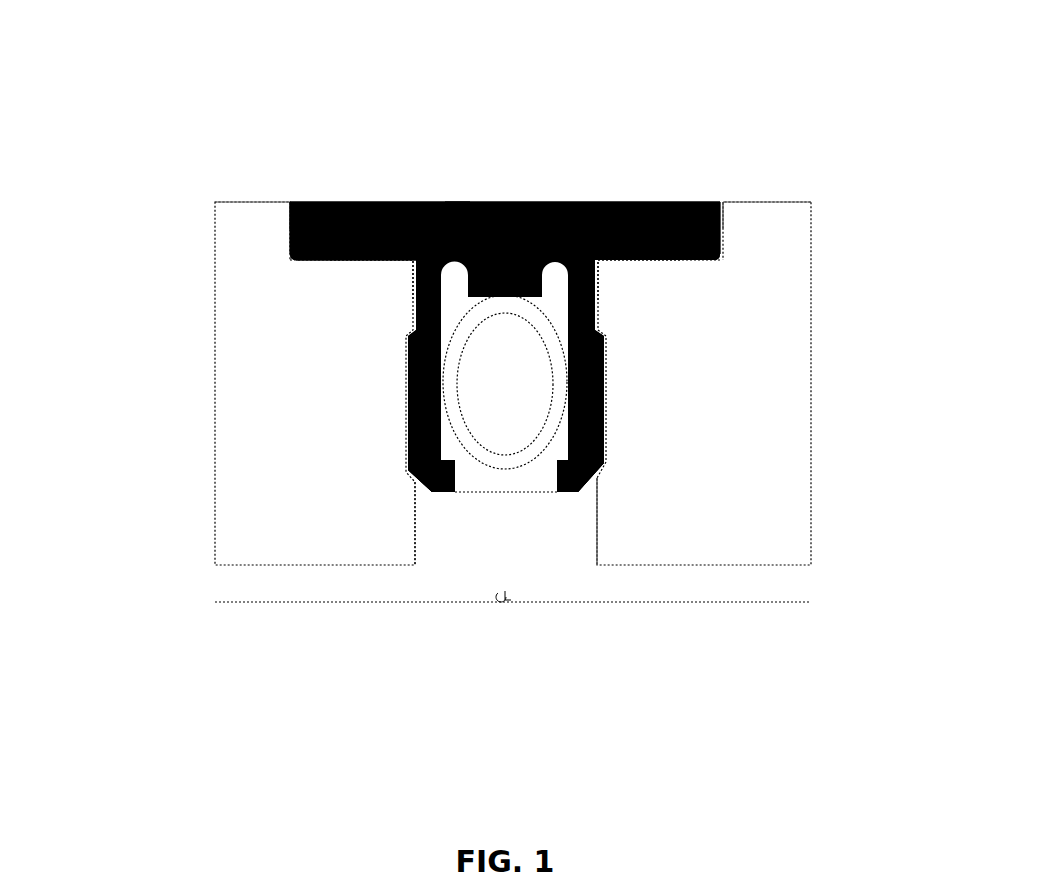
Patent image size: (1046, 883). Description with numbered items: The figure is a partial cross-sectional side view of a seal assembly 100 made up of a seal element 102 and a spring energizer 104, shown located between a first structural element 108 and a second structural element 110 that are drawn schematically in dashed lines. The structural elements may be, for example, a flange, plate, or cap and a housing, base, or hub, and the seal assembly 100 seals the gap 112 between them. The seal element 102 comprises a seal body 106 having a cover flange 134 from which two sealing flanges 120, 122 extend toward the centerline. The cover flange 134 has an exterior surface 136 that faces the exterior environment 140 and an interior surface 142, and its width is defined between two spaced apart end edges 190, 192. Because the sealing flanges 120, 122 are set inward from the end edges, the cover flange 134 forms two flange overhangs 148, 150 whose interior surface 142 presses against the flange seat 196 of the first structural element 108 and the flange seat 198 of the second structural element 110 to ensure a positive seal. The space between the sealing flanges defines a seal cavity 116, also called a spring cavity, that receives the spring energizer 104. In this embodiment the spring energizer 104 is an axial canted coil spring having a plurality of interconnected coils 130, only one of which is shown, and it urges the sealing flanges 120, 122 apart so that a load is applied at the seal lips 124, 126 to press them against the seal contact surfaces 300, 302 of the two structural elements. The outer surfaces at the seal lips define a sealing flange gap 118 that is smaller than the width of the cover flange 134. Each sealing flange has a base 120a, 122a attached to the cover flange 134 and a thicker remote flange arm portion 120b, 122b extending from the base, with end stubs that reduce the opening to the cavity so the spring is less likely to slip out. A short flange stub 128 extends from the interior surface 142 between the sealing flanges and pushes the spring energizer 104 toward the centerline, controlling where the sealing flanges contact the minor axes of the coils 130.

The seal assembly 100 is at (268, 156).
The seal element 102 is at (410, 190).
The spring energizer 104 is at (478, 470).
The seal body 106 is at (683, 202).
The first structural element 108 is at (273, 345).
The second structural element 110 is at (772, 402).
The gap 112 is at (465, 467).
The seal cavity 116 is at (507, 482).
The sealing flange gap 118 is at (535, 473).
The first sealing flange 120 is at (408, 413).
The base of first sealing flange 120a is at (416, 310).
The remote flange arm portion of first sealing flange 120b is at (403, 453).
The second sealing flange 122 is at (604, 405).
The base of second sealing flange 122a is at (597, 298).
The remote flange arm portion of second sealing flange 122b is at (607, 447).
The seal lip of first sealing flange 124 is at (408, 432).
The seal lip of second sealing flange 126 is at (605, 425).
The flange stub 128 is at (500, 290).
The coil 130 is at (562, 383).
The cover flange 134 is at (582, 202).
The exterior surface 136 is at (458, 205).
The exterior environment 140 is at (190, 48).
The interior surface 142 is at (345, 262).
The first flange overhang 148 is at (330, 202).
The second flange overhang 150 is at (662, 202).
The first end edge 190 is at (288, 228).
The second end edge 192 is at (722, 222).
The flange seat of first structural element 196 is at (374, 262).
The flange seat of second structural element 198 is at (690, 265).
The seal contact surface of first structural element 300 is at (413, 490).
The seal contact surface of second structural element 302 is at (600, 480).